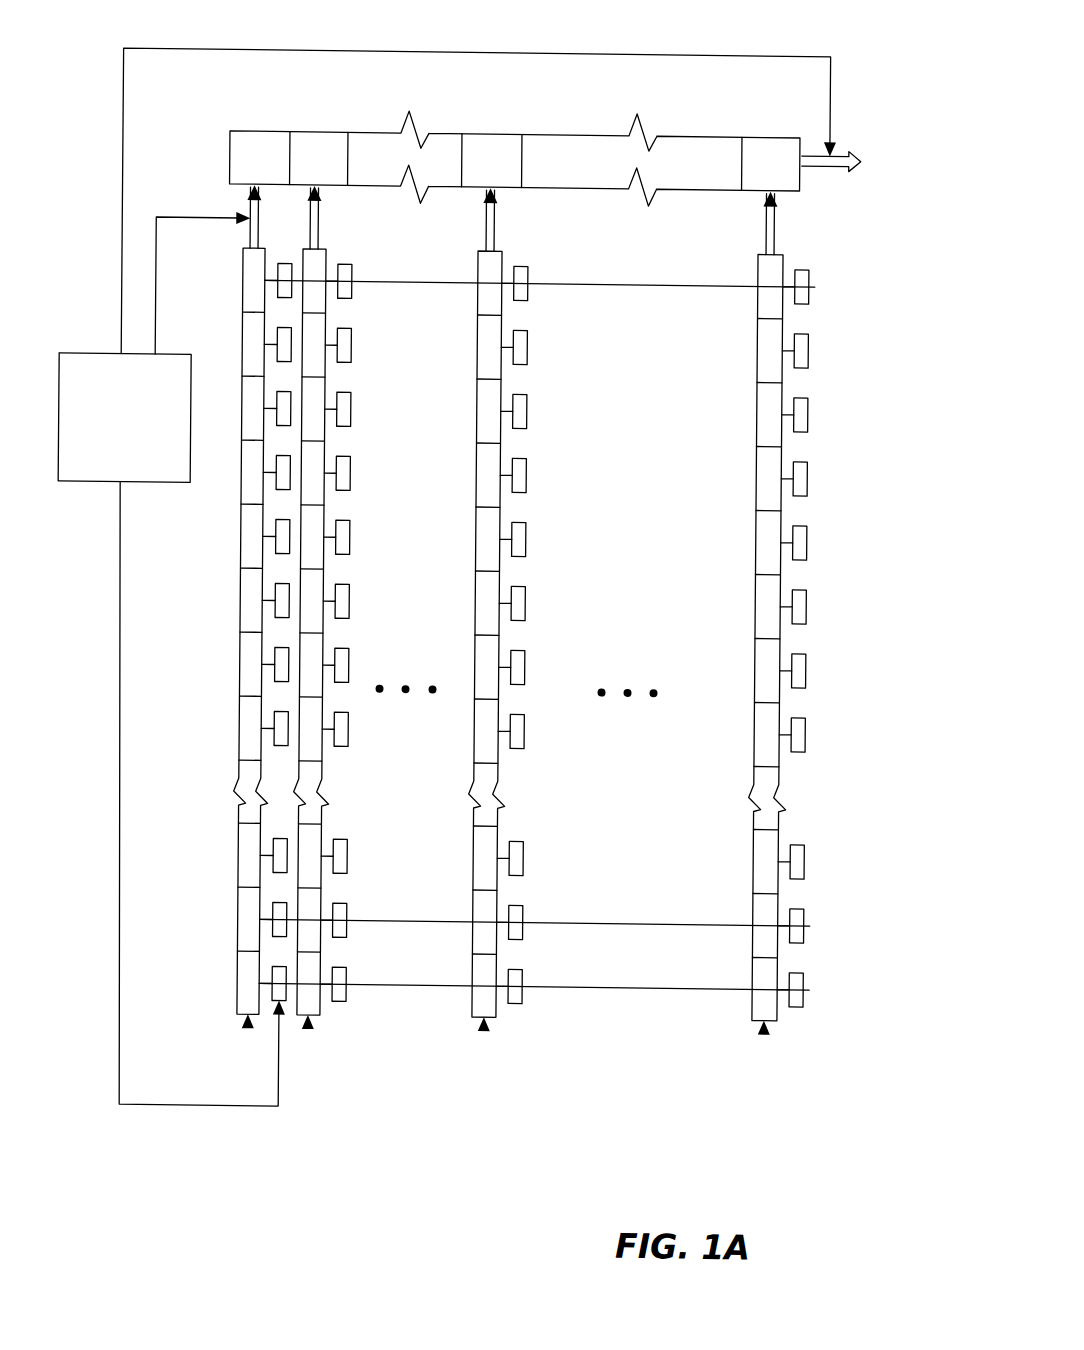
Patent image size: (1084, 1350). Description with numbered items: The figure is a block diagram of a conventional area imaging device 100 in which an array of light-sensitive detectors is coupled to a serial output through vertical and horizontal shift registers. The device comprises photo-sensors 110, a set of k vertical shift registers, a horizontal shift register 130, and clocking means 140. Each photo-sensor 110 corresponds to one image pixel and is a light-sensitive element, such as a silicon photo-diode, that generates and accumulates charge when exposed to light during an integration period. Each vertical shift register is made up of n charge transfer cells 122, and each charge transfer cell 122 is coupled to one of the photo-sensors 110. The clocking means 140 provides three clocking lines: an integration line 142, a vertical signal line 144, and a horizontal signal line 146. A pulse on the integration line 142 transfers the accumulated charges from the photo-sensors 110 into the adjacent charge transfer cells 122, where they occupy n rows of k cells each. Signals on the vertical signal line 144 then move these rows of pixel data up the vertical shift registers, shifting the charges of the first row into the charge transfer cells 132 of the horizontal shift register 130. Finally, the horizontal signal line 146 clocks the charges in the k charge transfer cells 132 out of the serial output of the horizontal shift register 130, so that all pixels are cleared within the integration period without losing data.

The area imaging device 100 is at (868, 30).
The photo-sensors 110 is at (527, 294).
The charge transfer cells 122 is at (247, 545).
The horizontal shift register 130 is at (565, 192).
The charge transfer cells of horizontal shift register 132 is at (768, 140).
The clocking means 140 is at (158, 480).
The integration line 142 is at (126, 858).
The vertical signal line 144 is at (207, 212).
The horizontal signal line 146 is at (124, 72).